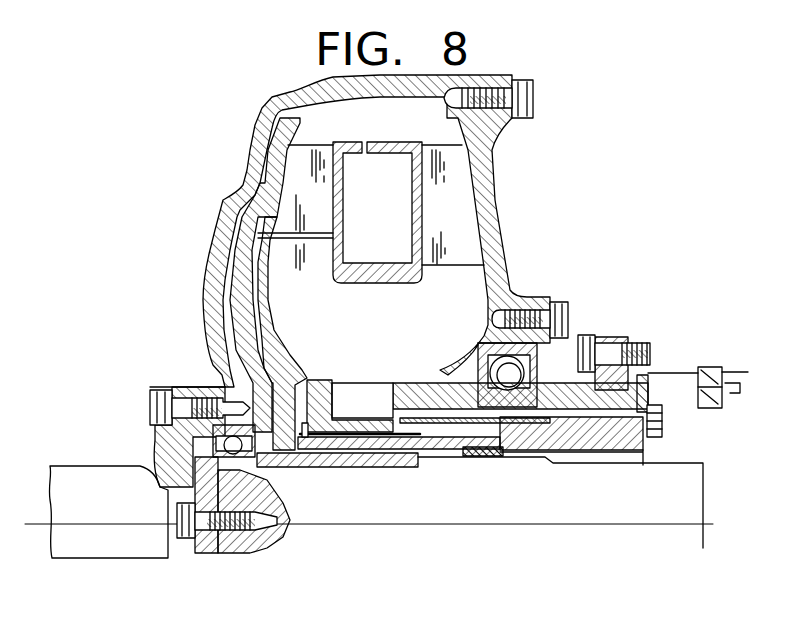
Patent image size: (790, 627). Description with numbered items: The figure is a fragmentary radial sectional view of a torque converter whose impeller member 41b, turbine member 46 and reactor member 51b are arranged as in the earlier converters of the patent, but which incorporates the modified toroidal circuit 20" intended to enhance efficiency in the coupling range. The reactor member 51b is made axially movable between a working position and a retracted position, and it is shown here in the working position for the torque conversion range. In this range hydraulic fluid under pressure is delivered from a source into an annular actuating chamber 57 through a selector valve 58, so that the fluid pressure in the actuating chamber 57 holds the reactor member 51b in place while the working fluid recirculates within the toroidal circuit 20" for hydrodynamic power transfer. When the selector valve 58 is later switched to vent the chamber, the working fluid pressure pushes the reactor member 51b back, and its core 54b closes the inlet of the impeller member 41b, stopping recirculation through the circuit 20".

The modified toroidal circuit 20 is at (409, 343).
The impeller member 41b is at (462, 222).
The turbine member 46 is at (321, 208).
The reactor member 51b is at (298, 283).
The core of the reactor member 54b is at (382, 268).
The annular actuating chamber 57 is at (477, 403).
The selector valve 58 is at (708, 366).